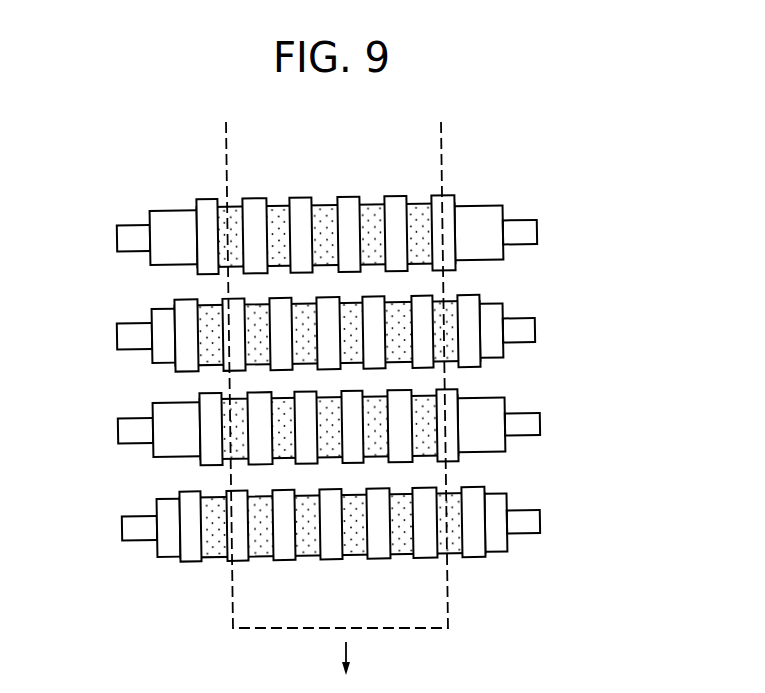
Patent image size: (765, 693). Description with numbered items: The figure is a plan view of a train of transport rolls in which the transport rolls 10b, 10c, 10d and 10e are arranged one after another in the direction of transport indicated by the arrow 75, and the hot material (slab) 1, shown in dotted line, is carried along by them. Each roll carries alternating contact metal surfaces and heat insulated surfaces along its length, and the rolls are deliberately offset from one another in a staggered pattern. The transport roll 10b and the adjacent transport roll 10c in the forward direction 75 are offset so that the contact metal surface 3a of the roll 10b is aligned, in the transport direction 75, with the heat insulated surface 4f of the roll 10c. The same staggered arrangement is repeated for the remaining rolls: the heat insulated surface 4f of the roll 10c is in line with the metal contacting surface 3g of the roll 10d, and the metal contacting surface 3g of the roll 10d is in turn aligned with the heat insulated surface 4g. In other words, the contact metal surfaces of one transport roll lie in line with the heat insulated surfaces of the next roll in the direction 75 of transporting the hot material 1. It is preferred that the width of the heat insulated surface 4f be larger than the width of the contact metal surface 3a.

The hot material (slab) 1 is at (448, 590).
The contact metal surface 3a is at (204, 199).
The metal contacting surface 3g is at (213, 395).
The heat insulated surface 4f is at (203, 303).
The heat insulated surface 4g is at (213, 495).
The transport roll 10b is at (520, 222).
The transport roll 10c is at (530, 323).
The transport roll 10d is at (532, 418).
The transport roll 10e is at (535, 518).
The arrow (direction of transport) 75 is at (347, 648).